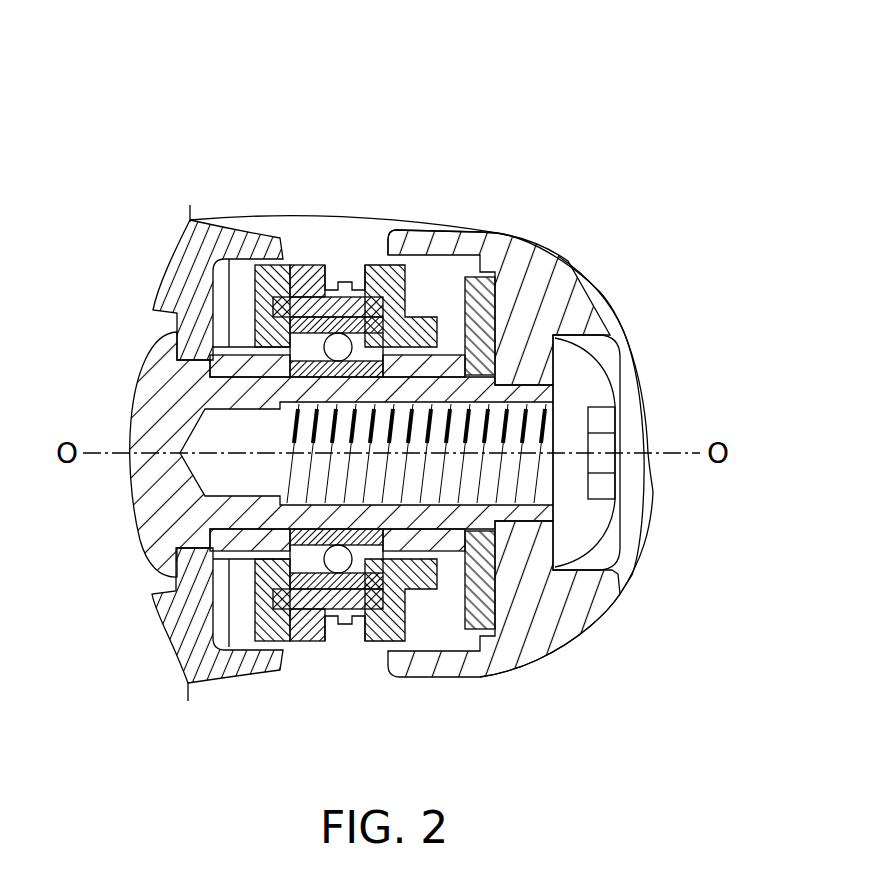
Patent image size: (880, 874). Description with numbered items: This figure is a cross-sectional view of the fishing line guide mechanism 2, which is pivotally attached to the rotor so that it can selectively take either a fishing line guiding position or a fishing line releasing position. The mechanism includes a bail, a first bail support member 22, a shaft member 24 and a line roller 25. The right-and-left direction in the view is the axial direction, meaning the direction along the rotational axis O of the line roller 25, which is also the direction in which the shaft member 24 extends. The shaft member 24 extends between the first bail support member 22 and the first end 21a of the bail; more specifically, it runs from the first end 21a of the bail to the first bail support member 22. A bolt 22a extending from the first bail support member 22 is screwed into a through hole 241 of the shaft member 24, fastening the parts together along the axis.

The fishing line guide mechanism 2 is at (488, 155).
The first end of the bail 21a is at (215, 216).
The first bail support member 22 is at (583, 627).
The bolt 22a is at (597, 384).
The shaft member 24 is at (128, 408).
The through hole 241 is at (353, 410).
The line roller 25 is at (342, 240).